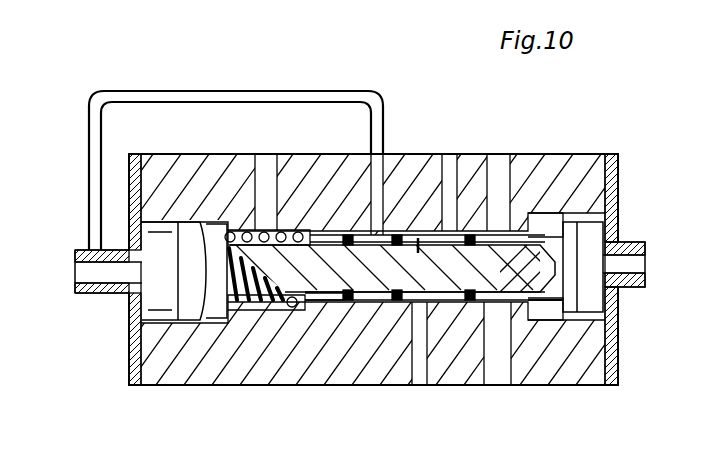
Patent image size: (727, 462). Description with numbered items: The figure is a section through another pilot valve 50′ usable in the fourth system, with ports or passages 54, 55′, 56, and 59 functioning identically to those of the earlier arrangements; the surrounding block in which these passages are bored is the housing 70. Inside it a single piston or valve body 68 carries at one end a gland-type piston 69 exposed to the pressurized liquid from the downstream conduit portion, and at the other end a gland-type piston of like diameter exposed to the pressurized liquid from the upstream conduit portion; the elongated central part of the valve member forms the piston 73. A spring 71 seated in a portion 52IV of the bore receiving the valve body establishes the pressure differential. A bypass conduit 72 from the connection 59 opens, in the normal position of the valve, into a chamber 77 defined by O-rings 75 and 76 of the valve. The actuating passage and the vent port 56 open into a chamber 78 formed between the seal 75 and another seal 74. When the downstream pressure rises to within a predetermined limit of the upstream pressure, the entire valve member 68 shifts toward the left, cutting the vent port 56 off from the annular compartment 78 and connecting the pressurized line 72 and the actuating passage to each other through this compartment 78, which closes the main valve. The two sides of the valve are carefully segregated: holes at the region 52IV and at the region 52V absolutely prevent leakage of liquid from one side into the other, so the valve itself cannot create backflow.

The pilot valve 50′ is at (612, 117).
The housing 70 is at (140, 328).
The connection 59 is at (92, 290).
The port 55′ is at (646, 262).
The bypass conduit 72 is at (383, 156).
The port 54 is at (267, 167).
The vent port 56 is at (457, 176).
The seal 74 is at (476, 306).
The chamber 78 is at (430, 332).
The piston 73 is at (500, 270).
The valve body 68 is at (419, 245).
The gland-type piston 69 is at (592, 248).
The bore portion 52IV is at (242, 230).
The chamber 77 is at (345, 304).
The region 52V is at (515, 306).
The spring 71 is at (245, 300).
The O-ring 76 is at (323, 302).
The O-ring 75 is at (372, 302).